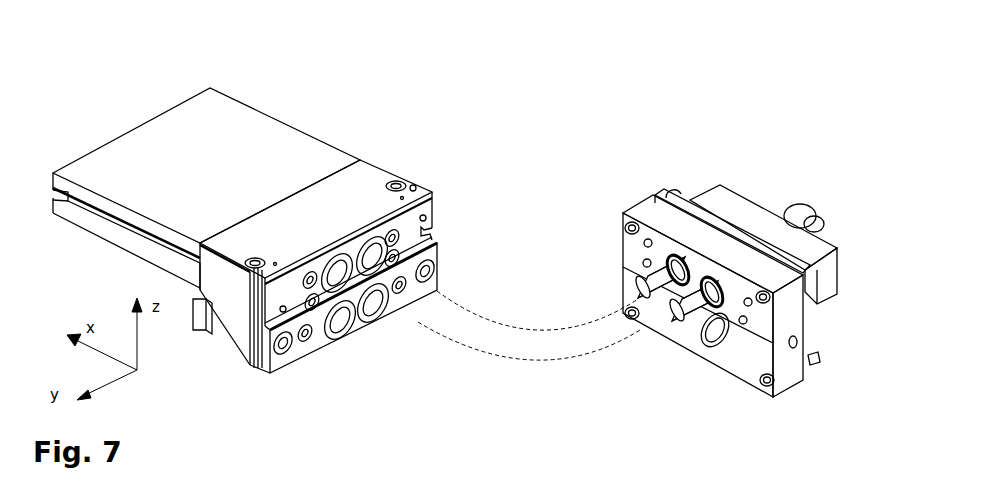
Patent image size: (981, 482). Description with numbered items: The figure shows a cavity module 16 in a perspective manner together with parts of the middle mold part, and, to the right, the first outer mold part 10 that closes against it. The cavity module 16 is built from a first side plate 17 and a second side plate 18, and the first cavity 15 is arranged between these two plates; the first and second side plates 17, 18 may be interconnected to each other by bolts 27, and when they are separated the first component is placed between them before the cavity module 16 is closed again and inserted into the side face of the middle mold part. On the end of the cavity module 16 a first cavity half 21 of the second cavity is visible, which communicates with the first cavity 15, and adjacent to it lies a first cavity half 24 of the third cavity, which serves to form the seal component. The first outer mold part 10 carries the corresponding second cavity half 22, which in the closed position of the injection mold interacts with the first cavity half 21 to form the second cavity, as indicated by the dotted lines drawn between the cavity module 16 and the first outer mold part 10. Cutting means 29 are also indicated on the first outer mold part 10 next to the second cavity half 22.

The first outer mold part 10 is at (730, 212).
The first cavity 15 is at (126, 145).
The cavity module 16 is at (315, 200).
The first side plate 17 is at (206, 143).
The second side plate 18 is at (108, 159).
The first cavity half 21 is at (413, 163).
The second cavity half 22 is at (732, 164).
The first cavity half 24 is at (471, 186).
The bolt 27 is at (286, 198).
The cutting means 29 is at (801, 175).